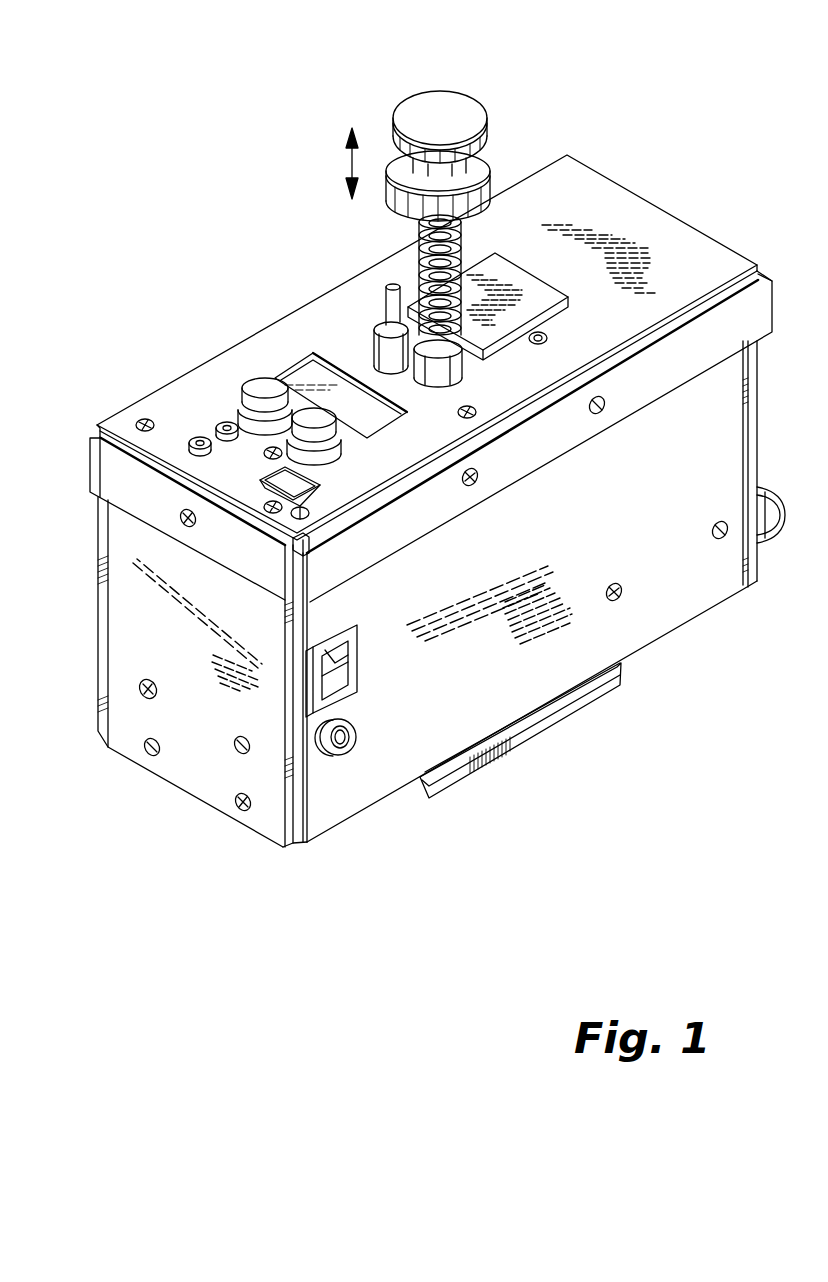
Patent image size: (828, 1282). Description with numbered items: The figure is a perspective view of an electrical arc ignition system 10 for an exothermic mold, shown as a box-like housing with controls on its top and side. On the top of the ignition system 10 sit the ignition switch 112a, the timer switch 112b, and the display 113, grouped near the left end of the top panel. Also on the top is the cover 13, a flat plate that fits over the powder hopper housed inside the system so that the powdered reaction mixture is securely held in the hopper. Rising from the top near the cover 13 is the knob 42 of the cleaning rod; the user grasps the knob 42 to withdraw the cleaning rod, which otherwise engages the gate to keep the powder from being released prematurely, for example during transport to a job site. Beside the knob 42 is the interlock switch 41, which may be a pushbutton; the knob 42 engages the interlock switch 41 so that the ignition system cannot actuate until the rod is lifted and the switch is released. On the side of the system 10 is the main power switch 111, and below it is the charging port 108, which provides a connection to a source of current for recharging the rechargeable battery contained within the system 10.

The electrical arc ignition system 10 is at (142, 191).
The knob 42 is at (432, 100).
The cover 13 is at (513, 275).
The interlock switch 41 is at (376, 325).
The display 113 is at (335, 395).
The ignition switch 112a is at (308, 410).
The timer switch 112b is at (262, 386).
The main power switch 111 is at (343, 650).
The charging port 108 is at (346, 750).